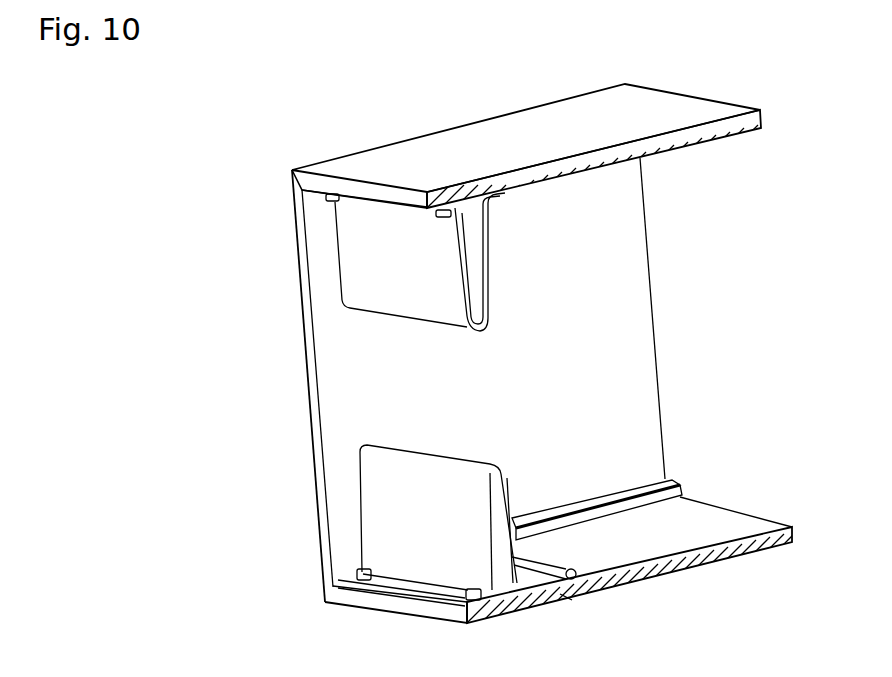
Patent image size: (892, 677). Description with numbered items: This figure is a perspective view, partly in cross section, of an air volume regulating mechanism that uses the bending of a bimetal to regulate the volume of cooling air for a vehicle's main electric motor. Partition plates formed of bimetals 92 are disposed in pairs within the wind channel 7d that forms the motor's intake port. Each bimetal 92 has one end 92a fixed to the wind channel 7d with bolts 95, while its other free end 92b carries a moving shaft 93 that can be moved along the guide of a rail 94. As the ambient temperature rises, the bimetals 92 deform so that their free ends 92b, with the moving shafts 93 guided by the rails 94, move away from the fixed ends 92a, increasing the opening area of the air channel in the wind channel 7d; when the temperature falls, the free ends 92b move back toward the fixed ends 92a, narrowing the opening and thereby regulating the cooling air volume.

The wind channel 7d is at (433, 153).
The bimetal 92 is at (350, 253).
The one end 92a is at (400, 582).
The other free end 92b is at (566, 597).
The moving shaft 93 is at (578, 578).
The rail 94 is at (674, 482).
The bolt 95 is at (358, 570).